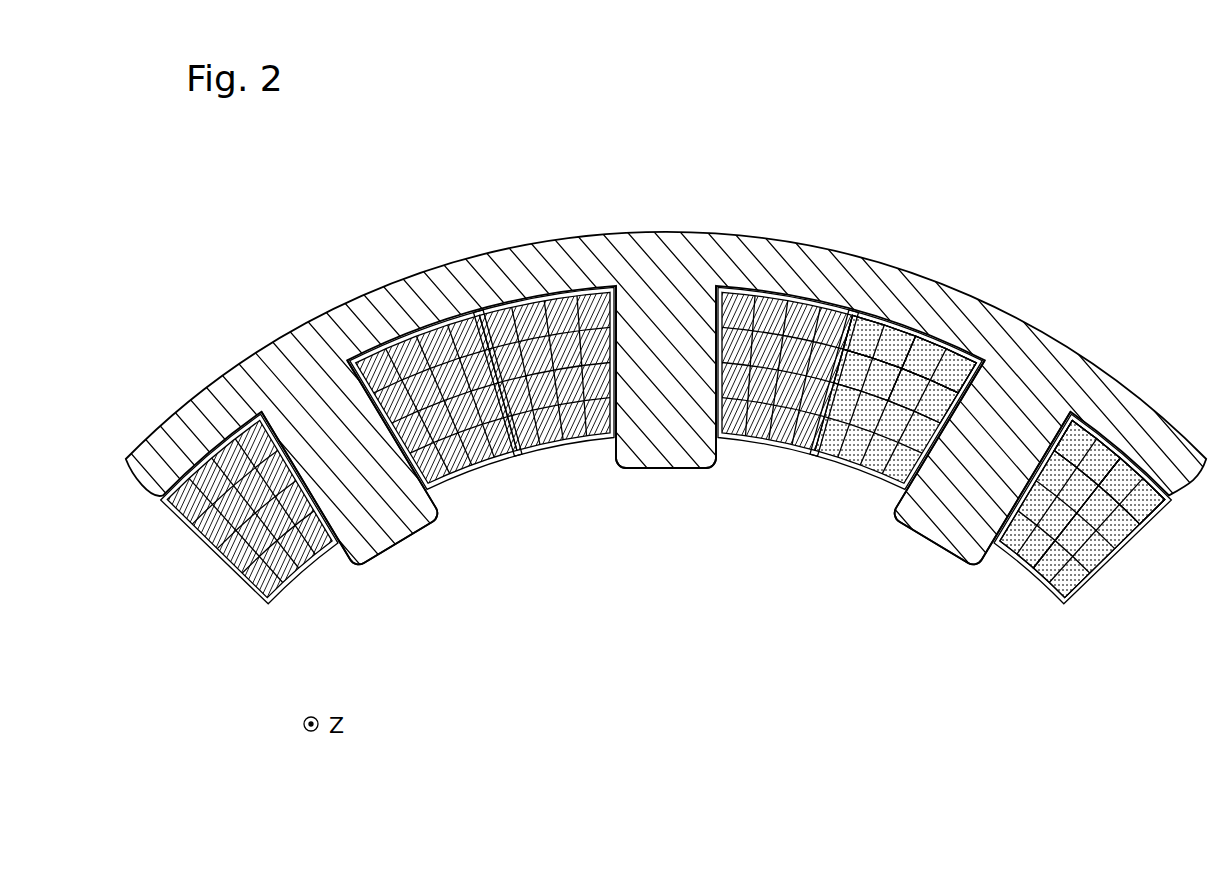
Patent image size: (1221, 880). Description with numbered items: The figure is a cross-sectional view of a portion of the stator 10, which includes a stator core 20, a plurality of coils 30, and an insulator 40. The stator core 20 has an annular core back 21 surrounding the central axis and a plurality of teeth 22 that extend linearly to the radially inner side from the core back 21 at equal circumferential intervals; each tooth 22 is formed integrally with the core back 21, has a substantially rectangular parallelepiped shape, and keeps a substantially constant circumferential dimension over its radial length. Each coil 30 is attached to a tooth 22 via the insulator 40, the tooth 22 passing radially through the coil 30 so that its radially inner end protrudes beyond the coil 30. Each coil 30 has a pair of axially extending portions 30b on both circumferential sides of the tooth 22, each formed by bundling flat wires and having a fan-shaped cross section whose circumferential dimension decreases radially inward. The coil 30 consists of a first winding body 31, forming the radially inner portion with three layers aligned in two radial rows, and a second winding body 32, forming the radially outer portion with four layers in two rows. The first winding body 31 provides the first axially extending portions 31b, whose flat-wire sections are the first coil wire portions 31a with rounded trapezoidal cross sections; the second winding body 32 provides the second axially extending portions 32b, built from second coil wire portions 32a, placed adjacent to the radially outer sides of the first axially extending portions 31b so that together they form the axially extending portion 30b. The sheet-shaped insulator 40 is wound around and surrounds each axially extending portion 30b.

The stator 10 is at (1084, 235).
The stator core 20 is at (1079, 350).
The core back 21 is at (578, 252).
The tooth 22 is at (667, 470).
The coil 30 is at (412, 325).
The axially extending portion 30b is at (960, 221).
The first winding body 31 is at (1070, 596).
The first coil wire portion 31a is at (873, 453).
The first axially extending portion 31b is at (853, 377).
The second winding body 32 is at (1124, 549).
The second coil wire portion 32a is at (937, 348).
The second axially extending portion 32b is at (933, 331).
The insulator 40 is at (575, 444).